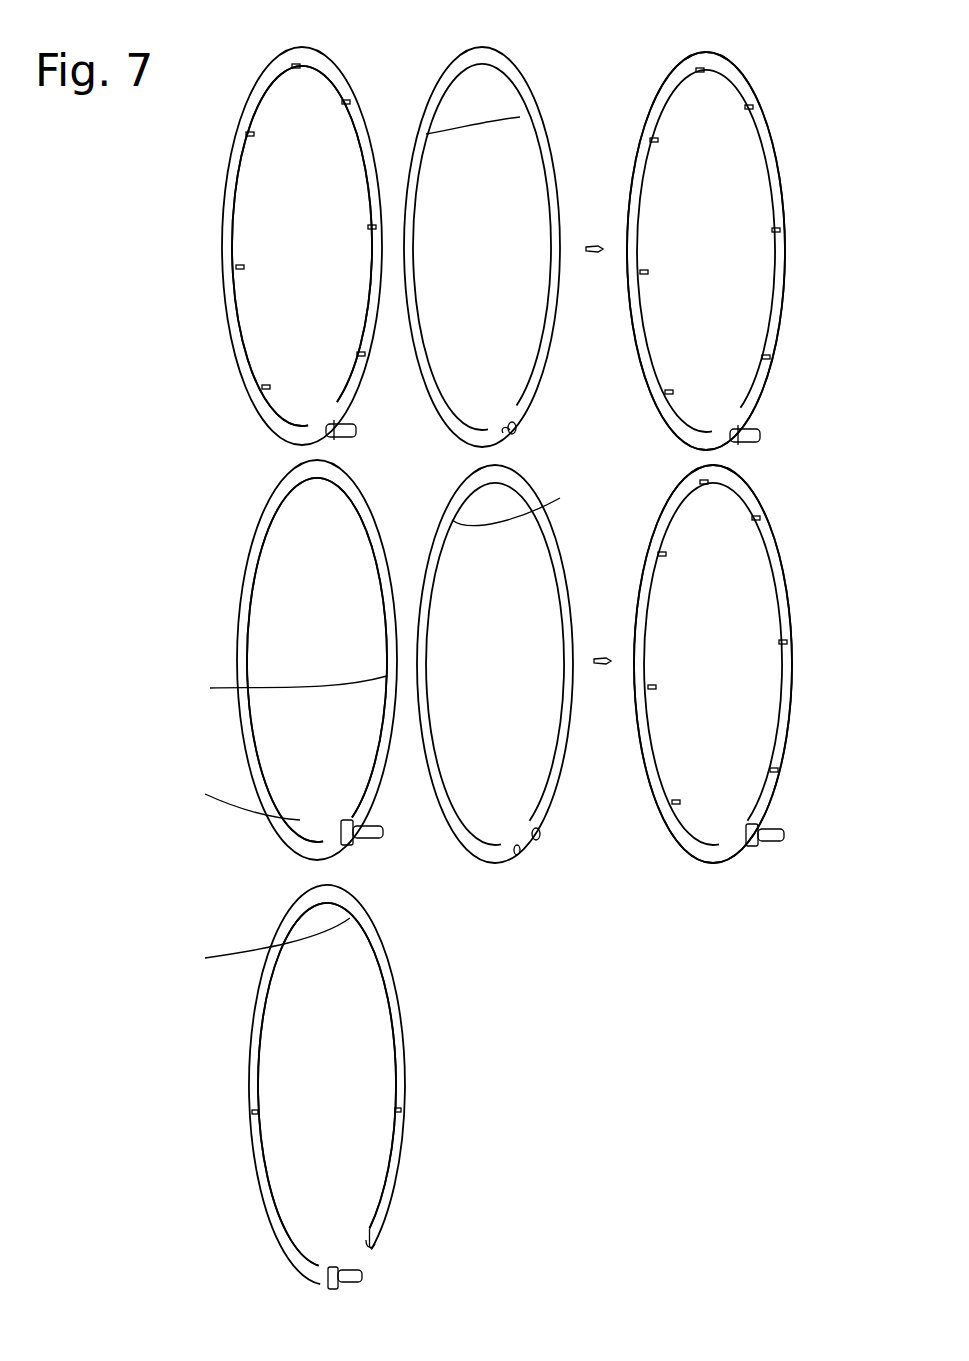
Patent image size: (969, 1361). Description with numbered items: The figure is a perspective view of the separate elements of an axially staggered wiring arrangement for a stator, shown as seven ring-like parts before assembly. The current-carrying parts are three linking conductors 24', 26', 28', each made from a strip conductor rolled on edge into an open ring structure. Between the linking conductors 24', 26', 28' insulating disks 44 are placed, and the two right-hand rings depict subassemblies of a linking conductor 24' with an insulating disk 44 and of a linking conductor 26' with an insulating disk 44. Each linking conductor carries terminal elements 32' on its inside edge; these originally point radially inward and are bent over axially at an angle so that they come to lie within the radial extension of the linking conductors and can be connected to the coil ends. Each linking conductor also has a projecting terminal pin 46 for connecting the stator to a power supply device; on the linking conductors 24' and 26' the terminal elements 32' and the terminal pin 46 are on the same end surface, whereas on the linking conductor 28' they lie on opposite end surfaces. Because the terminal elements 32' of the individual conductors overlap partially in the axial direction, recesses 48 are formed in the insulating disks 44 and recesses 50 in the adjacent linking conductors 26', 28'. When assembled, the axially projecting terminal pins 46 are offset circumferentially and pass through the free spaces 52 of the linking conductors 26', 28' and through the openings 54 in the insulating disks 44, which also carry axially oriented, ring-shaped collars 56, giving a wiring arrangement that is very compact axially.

The linking conductor 24' is at (530, 228).
The linking conductor 26' is at (511, 661).
The linking conductor 28' is at (365, 1084).
The terminal element 32' is at (273, 666).
The insulating disk 44 is at (520, 72).
The terminal pin 46 is at (350, 424).
The recess 48 is at (428, 134).
The recess 50 is at (275, 822).
The free space 52 is at (362, 1252).
The opening 54 is at (522, 432).
The ring-shaped collar 56 is at (520, 424).